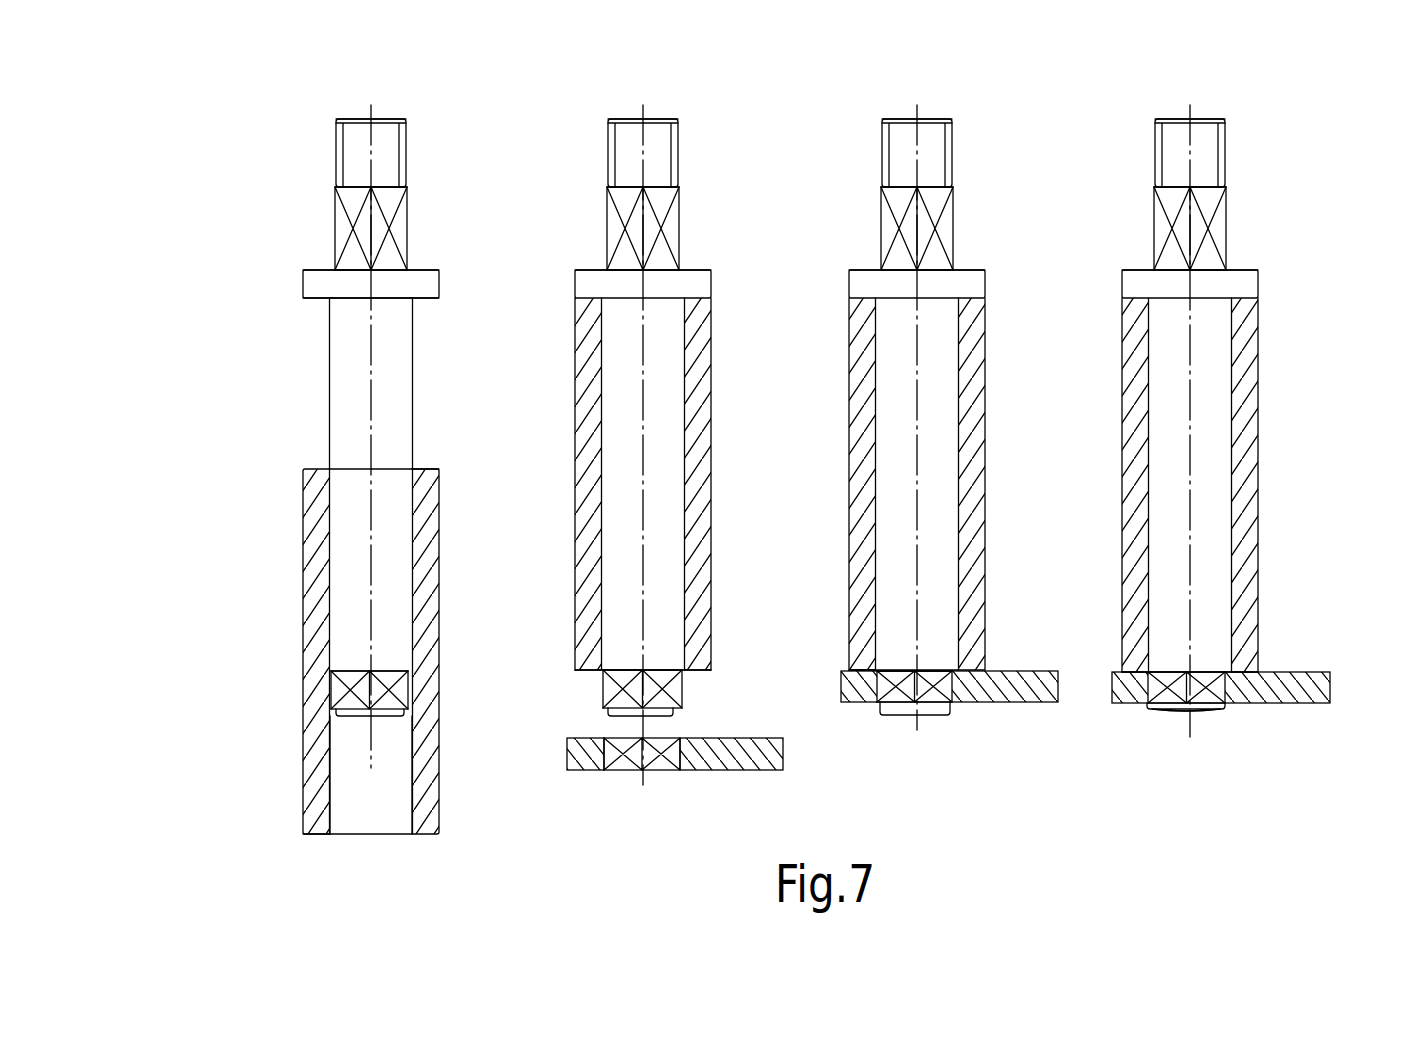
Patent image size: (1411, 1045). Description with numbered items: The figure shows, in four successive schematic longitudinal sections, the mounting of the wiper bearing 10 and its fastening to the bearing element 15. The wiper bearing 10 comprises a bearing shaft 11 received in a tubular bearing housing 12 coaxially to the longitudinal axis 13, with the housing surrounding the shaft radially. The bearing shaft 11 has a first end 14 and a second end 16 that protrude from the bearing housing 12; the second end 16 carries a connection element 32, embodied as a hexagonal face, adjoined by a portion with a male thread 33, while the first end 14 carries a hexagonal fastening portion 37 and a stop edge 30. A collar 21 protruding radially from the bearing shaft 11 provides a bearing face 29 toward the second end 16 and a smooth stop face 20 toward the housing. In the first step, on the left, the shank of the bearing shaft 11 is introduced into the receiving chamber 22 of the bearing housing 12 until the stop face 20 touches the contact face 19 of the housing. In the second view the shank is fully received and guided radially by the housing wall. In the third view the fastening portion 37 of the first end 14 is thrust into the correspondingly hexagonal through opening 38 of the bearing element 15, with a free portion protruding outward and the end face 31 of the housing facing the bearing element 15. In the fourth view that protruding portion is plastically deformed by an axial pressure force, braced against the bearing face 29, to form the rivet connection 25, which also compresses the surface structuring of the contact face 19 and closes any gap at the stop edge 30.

The wiper bearing 10 is at (420, 122).
The bearing shaft 11 is at (352, 392).
The bearing housing 12 is at (318, 550).
The longitudinal axis 13 is at (372, 404).
The first end 14 is at (336, 693).
The bearing element 15 is at (735, 762).
The second end 16 is at (346, 228).
The contact face 19 is at (438, 469).
The stop face 20 is at (432, 300).
The collar 21 is at (326, 282).
The receiving chamber 22 is at (358, 763).
The rivet connection 25 is at (1200, 712).
The bearing face 29 is at (421, 269).
The stop edge 30 is at (683, 675).
The end face 31 is at (318, 822).
The connection element 32 is at (353, 198).
The male thread 33 is at (336, 146).
The fastening portion 37 is at (345, 680).
The through opening 38 is at (622, 777).